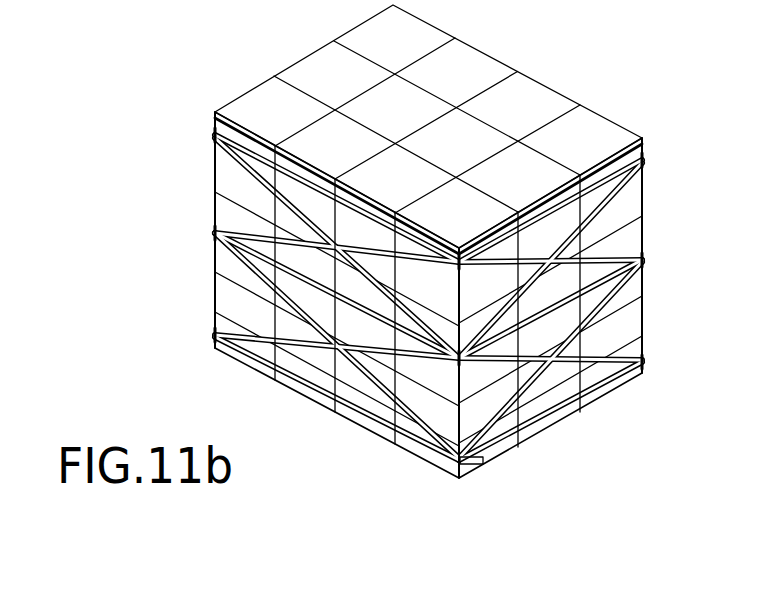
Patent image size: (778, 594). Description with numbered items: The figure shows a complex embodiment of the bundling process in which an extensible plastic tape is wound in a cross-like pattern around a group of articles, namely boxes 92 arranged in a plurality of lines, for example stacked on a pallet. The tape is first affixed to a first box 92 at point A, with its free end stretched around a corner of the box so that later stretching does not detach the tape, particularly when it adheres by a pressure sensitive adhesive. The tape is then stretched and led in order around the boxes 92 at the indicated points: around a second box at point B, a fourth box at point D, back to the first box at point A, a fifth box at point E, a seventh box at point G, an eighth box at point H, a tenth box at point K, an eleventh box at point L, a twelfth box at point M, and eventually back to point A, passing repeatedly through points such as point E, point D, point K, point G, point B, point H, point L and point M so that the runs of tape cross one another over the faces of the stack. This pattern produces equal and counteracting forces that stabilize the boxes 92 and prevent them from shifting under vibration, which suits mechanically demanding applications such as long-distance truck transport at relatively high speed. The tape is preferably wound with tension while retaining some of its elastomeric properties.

The box 92 is at (358, 42).
The point G is at (215, 134).
The point D is at (215, 233).
The point M is at (215, 336).
The point L is at (645, 160).
The point B is at (643, 260).
The point E is at (643, 362).
The point K is at (457, 264).
The point H is at (457, 360).
The point A is at (455, 462).